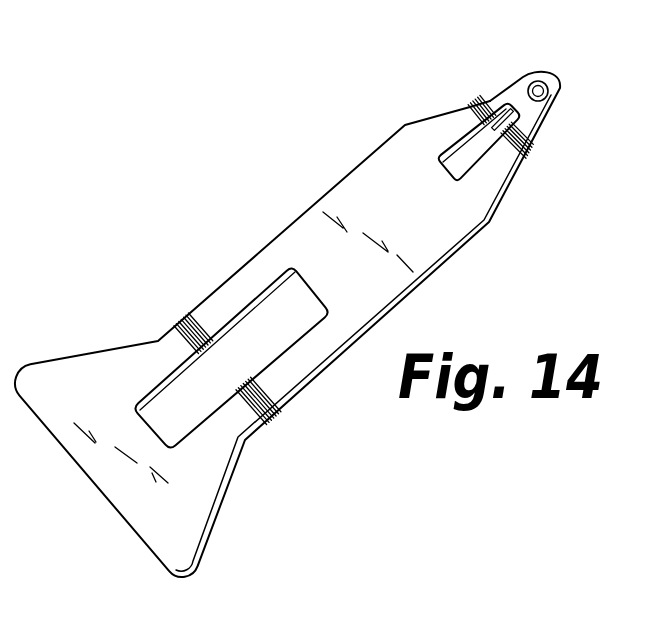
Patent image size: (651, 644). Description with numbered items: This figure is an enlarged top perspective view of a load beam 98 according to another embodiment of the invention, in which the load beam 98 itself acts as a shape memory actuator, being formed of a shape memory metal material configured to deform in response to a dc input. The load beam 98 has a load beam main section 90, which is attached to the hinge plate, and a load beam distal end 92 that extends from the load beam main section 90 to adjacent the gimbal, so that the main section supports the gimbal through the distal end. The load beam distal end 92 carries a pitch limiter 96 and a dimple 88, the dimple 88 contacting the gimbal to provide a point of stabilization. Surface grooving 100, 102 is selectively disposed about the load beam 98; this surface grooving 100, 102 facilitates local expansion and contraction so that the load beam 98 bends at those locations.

The dimple 88 is at (541, 80).
The load beam main section 90 is at (238, 281).
The load beam distal end 92 is at (509, 92).
The pitch limiter 96 is at (513, 118).
The load beam 98 is at (332, 203).
The surface grooving 100 is at (478, 104).
The surface grooving 102 is at (183, 324).